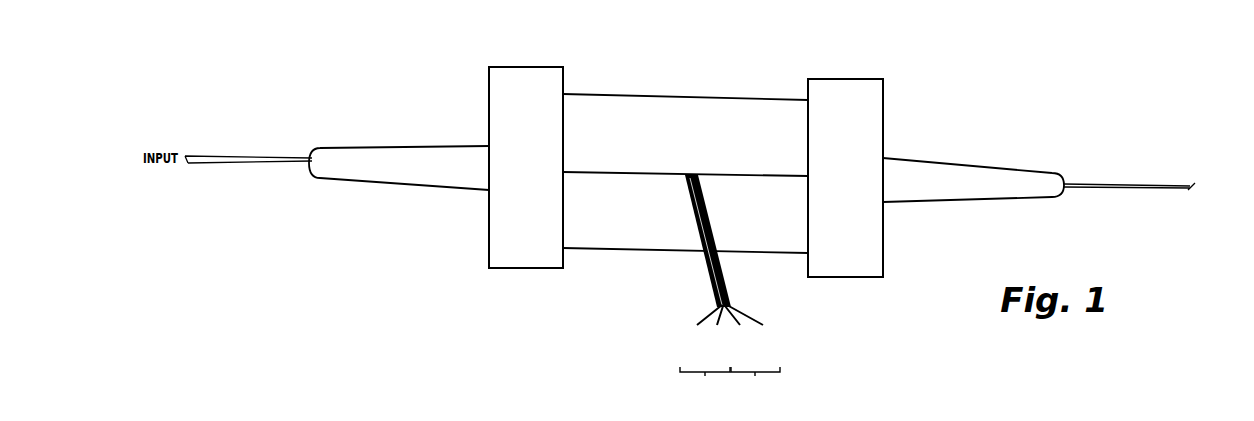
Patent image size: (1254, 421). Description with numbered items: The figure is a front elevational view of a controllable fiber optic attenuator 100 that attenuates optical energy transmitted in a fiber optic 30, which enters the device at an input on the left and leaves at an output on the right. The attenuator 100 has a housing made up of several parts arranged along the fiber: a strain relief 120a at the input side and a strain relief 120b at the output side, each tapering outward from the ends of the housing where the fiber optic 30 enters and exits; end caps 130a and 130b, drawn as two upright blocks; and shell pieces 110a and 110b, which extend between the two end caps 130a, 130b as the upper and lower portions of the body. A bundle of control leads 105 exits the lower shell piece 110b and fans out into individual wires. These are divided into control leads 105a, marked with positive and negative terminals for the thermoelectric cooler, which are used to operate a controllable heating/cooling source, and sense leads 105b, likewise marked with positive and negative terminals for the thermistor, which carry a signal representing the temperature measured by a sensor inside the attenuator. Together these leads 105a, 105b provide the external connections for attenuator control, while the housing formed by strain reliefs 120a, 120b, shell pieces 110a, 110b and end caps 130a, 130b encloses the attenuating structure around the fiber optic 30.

The attenuator 100 is at (1041, 107).
The fiber optic 30 is at (1118, 185).
The control leads 105 is at (725, 286).
The control leads 105a is at (704, 382).
The sense leads 105b is at (758, 382).
The shell piece 110a is at (620, 108).
The shell piece 110b is at (619, 238).
The strain relief 120a is at (407, 157).
The strain relief 120b is at (955, 173).
The end cap 130a is at (523, 85).
The end cap 130b is at (845, 93).